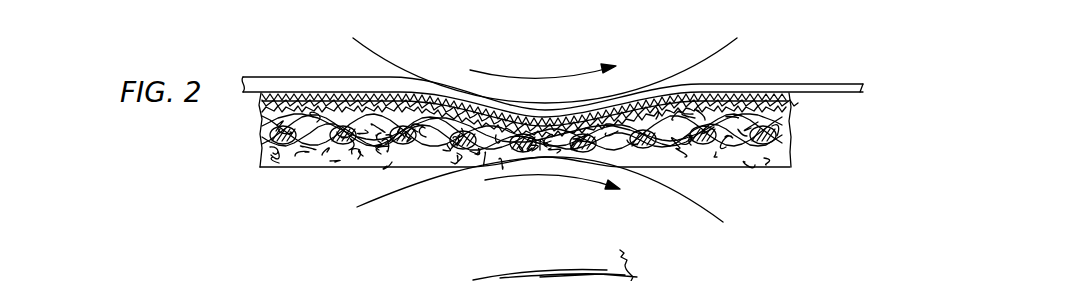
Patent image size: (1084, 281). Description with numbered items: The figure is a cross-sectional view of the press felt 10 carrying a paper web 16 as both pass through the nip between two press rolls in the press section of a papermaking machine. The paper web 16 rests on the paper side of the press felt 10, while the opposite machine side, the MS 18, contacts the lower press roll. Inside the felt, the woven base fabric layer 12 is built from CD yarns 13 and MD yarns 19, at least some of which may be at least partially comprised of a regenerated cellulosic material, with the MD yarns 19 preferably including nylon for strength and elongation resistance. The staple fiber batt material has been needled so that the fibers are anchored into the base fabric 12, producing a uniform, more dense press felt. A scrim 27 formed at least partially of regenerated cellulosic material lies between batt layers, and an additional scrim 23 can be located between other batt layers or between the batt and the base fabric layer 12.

The press felt 10 is at (845, 135).
The base fabric layer 12 is at (255, 140).
The CD yarns 13 is at (342, 165).
The paper web 16 is at (291, 78).
The MS 18 is at (714, 168).
The MD yarns 19 is at (263, 132).
The additional scrim 23 is at (790, 110).
The scrim 27 is at (772, 100).